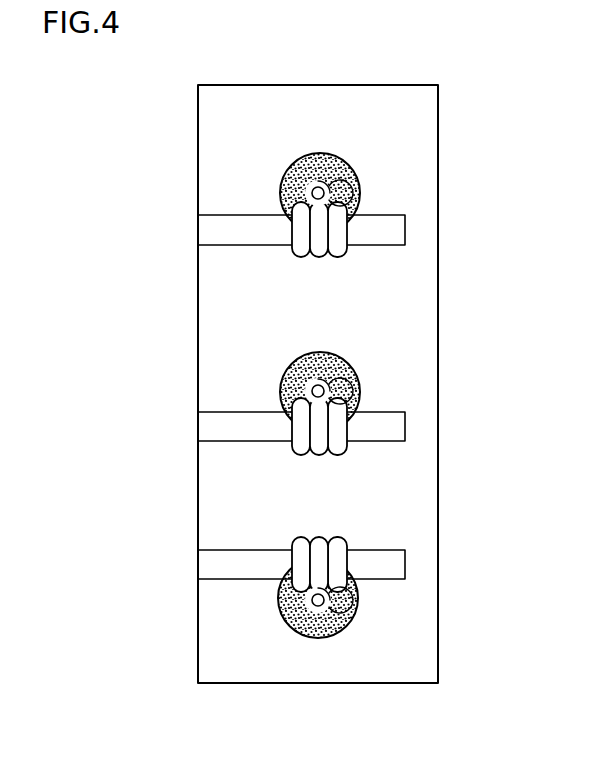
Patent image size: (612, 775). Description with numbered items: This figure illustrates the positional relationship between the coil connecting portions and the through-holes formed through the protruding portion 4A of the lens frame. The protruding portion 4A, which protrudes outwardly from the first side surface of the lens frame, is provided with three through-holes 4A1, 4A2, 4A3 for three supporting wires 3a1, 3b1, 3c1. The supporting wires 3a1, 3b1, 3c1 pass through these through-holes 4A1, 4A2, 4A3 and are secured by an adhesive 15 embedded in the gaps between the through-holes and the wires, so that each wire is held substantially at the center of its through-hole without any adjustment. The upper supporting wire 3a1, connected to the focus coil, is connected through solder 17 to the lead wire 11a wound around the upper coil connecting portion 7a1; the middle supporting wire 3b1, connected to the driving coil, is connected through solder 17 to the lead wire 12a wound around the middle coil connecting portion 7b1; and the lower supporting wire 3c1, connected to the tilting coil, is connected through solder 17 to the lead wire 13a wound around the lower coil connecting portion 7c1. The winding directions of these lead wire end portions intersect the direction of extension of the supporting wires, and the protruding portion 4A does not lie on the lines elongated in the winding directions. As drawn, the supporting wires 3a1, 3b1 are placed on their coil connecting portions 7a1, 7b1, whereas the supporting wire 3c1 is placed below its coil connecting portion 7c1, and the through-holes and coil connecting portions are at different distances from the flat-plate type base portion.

The protruding portion 4A is at (403, 107).
The through-hole 4A1 is at (302, 160).
The through-hole 4A2 is at (282, 400).
The through-hole 4A3 is at (283, 588).
The upper supporting wire 3a1 is at (352, 160).
The middle supporting wire 3b1 is at (290, 366).
The lower supporting wire 3c1 is at (286, 620).
The adhesive 15 is at (318, 186).
The solder 17 is at (358, 194).
The upper coil connecting portion 7a1 is at (388, 231).
The middle coil connecting portion 7b1 is at (388, 428).
The lower coil connecting portion 7c1 is at (378, 562).
The first coil 11a is at (342, 238).
The second coil 12a is at (342, 436).
The third coil 13a is at (340, 547).